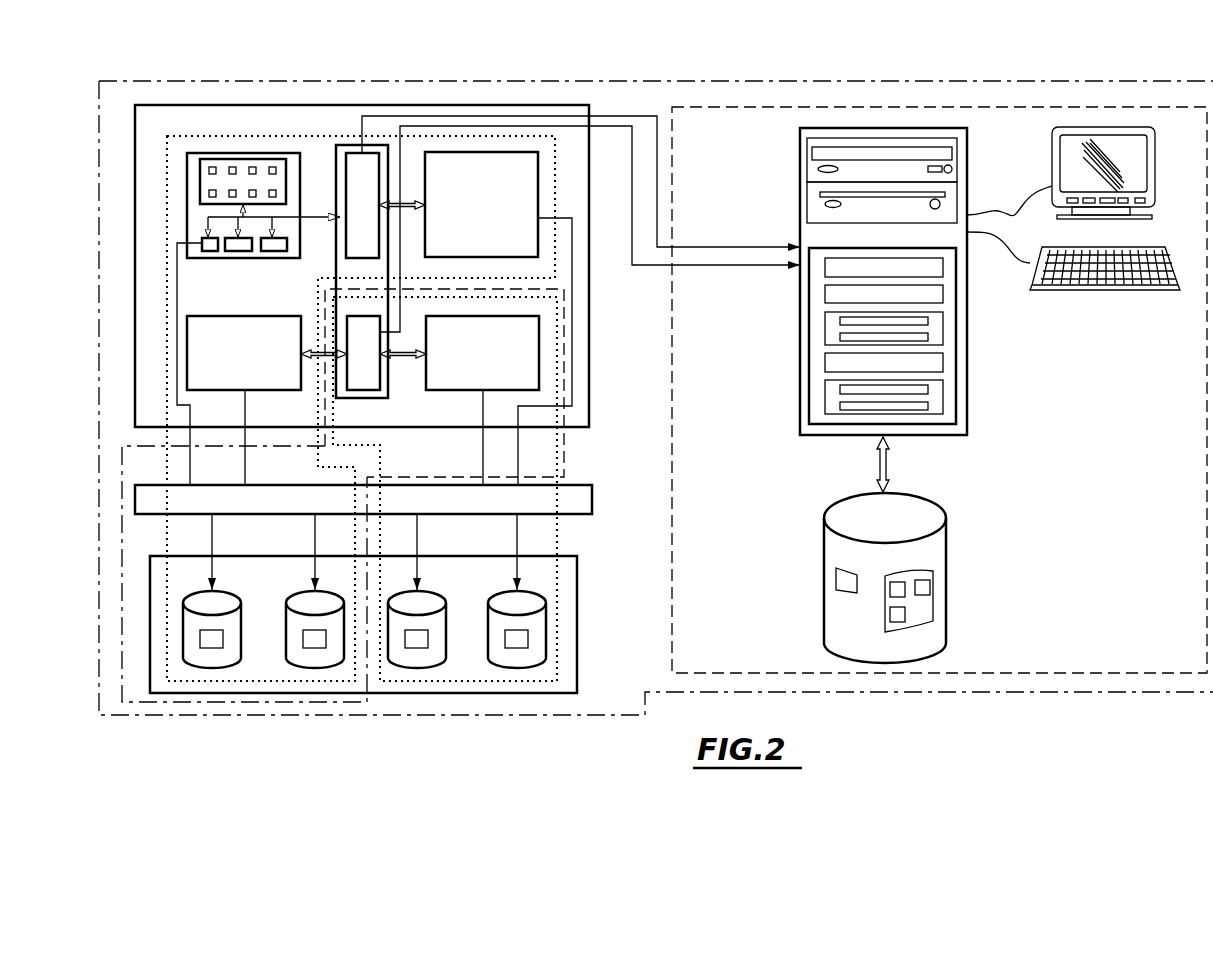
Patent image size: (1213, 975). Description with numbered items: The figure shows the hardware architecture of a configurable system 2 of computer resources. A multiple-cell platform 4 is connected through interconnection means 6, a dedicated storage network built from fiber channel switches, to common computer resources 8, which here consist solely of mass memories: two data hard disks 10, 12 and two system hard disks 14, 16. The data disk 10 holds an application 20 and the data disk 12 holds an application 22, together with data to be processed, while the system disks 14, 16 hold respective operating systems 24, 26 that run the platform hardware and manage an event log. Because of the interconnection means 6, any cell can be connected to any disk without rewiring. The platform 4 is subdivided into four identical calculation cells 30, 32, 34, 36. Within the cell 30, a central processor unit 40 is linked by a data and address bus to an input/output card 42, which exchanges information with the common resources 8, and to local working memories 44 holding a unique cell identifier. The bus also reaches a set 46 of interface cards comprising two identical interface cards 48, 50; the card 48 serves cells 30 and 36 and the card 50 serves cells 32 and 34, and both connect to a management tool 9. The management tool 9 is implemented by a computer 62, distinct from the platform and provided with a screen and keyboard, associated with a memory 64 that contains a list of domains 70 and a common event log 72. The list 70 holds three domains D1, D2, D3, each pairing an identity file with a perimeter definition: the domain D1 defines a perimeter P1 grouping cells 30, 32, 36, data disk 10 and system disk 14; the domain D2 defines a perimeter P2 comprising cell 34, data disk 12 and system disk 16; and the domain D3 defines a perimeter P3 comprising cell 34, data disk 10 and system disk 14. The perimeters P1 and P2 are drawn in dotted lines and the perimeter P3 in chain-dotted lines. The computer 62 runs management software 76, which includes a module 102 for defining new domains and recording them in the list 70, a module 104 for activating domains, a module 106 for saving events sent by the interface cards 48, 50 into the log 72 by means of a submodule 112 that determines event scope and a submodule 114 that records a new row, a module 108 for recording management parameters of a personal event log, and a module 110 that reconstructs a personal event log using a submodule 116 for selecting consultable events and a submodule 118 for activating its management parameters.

The configurable system 2 is at (120, 632).
The multiple-cell platform 4 is at (303, 100).
The interconnection means 6 is at (594, 492).
The common computer resources 8 is at (579, 594).
The management tool 9 is at (1120, 677).
The data hard disk 10 is at (211, 670).
The data hard disk 12 is at (417, 670).
The system hard disk 14 is at (314, 670).
The system hard disk 16 is at (519, 670).
The application 20 is at (205, 640).
The application 22 is at (420, 642).
The operating system 24 is at (317, 640).
The operating system 26 is at (540, 640).
The calculation cell 30 is at (186, 194).
The calculation cell 32 is at (244, 353).
The calculation cell 34 is at (482, 353).
The calculation cell 36 is at (481, 204).
The central processor unit 40 is at (215, 157).
The input/output card 42 is at (202, 239).
The local working memories 44 is at (236, 252).
The set of interface cards 46 is at (337, 144).
The interface card 48 is at (345, 190).
The interface card 50 is at (372, 370).
The computer 62 is at (798, 159).
The memory 64 is at (948, 530).
The list of domains 70 is at (935, 605).
The common event log 72 is at (834, 580).
The management software 76 is at (807, 306).
The module for defining new domains 102 is at (936, 266).
The module for activating domains 104 is at (940, 296).
The module for saving events 106 is at (823, 331).
The module for recording management parameters 108 is at (940, 365).
The module for reconstructing a personal event log 110 is at (823, 401).
The submodule for determining event scope 112 is at (928, 321).
The submodule for recording a new row 114 is at (928, 338).
The submodule for selecting events 116 is at (928, 390).
The submodule for activating management parameters 118 is at (928, 406).
The perimeter P1 is at (165, 349).
The perimeter P2 is at (560, 530).
The perimeter P3 is at (120, 444).
The domain D1 is at (897, 580).
The domain D2 is at (925, 583).
The domain D3 is at (897, 618).